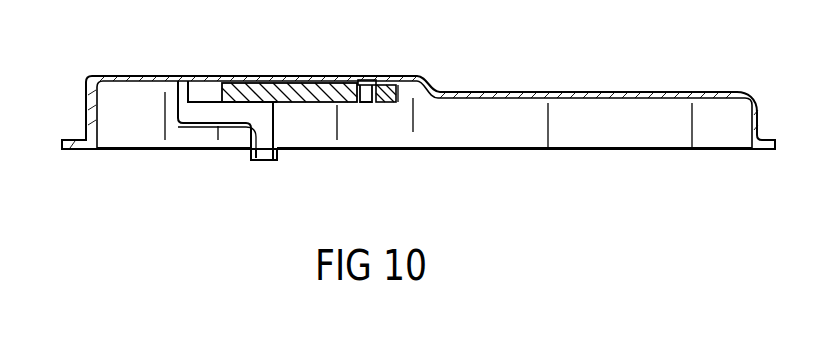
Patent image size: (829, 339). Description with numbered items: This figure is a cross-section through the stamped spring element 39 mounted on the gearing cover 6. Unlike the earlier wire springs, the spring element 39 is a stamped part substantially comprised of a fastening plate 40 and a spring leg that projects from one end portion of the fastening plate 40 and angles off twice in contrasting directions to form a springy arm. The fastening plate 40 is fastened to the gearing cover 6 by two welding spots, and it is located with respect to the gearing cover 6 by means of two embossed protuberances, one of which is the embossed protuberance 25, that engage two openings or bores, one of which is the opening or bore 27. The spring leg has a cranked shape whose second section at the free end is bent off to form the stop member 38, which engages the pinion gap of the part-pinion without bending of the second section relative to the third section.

The gearing cover 6 is at (666, 92).
The embossed protuberance 25 is at (372, 81).
The opening or bore 27 is at (373, 100).
The stop member 38 is at (263, 152).
The spring element 39 is at (207, 77).
The fastening plate 40 is at (308, 77).